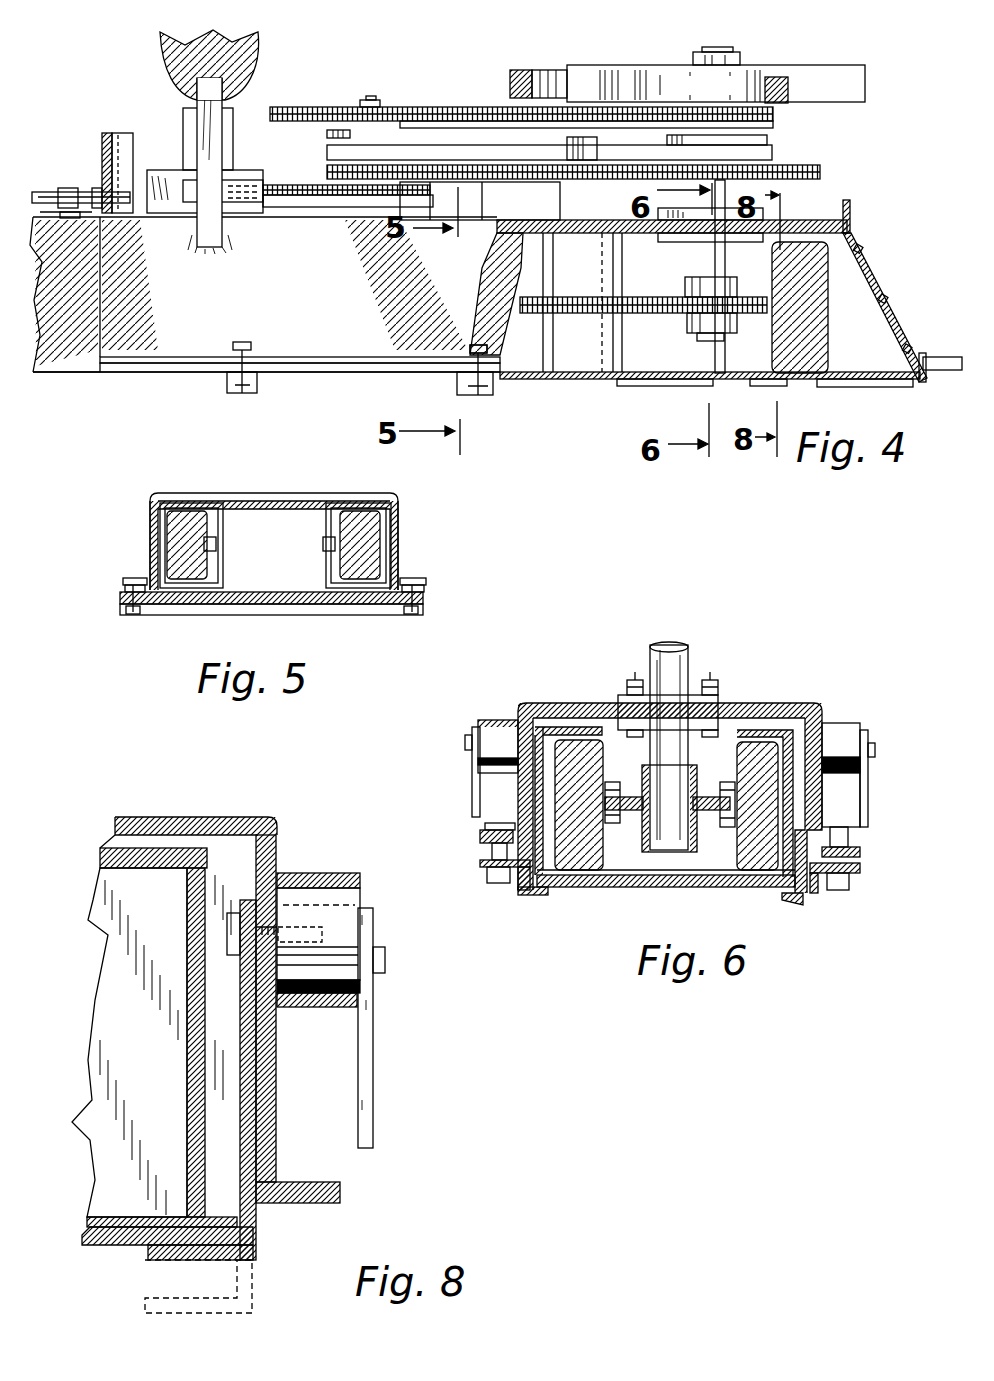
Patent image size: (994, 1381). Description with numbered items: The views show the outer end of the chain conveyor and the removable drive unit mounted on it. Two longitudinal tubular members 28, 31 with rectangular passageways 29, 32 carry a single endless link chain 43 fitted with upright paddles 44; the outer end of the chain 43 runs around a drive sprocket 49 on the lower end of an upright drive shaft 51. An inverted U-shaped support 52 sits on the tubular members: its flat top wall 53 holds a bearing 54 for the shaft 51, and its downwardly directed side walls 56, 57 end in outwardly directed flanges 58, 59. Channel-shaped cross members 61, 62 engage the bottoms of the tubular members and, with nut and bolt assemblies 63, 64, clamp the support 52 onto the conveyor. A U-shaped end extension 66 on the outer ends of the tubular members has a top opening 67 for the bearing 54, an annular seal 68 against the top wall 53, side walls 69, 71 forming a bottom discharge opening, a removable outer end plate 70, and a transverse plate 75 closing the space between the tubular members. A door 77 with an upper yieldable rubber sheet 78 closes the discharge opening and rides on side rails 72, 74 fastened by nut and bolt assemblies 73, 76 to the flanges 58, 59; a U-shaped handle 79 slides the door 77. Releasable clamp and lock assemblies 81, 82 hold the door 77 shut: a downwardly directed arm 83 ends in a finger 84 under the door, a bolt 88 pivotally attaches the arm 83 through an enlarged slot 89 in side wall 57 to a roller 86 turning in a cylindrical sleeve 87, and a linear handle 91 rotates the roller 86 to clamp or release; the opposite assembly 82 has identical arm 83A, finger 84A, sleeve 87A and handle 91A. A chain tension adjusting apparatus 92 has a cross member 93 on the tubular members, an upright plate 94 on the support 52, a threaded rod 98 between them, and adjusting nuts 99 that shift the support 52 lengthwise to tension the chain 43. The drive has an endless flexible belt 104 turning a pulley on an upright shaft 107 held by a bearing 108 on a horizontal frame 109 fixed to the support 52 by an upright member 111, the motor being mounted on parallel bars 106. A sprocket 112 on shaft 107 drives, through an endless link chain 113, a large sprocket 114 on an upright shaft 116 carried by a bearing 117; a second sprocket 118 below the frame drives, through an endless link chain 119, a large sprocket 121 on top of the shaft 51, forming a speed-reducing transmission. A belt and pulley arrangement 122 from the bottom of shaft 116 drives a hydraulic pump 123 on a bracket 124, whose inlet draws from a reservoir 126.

In FIG. 5, the tubular member 28 is at (230, 535).
In FIG. 5, the longitudinal passageway 29 is at (338, 520).
In FIG. 4, the tubular member 31 is at (90, 362).
In FIG. 5, the tubular member 31 is at (323, 507).
In FIG. 5, the longitudinal passageway 32 is at (207, 577).
In FIG. 4, the endless link chain 43 is at (563, 320).
In FIG. 5, the endless link chain 43 is at (207, 557).
In FIG. 6, the endless link chain 43 is at (722, 827).
In FIG. 4, the upright paddles 44 is at (543, 353).
In FIG. 5, the upright paddles 44 is at (173, 520).
In FIG. 6, the upright paddles 44 is at (753, 860).
In FIG. 4, the drive sprocket 49 is at (690, 317).
In FIG. 6, the drive sprocket 49 is at (640, 840).
In FIG. 4, the drive shaft 51 is at (700, 325).
In FIG. 6, the drive shaft 51 is at (667, 840).
In FIG. 4, the U-shaped support 52 is at (180, 305).
In FIG. 5, the U-shaped support 52 is at (399, 491).
In FIG. 6, the U-shaped support 52 is at (812, 698).
In FIG. 8, the U-shaped support 52 is at (128, 805).
In FIG. 4, the top wall 53 is at (672, 226).
In FIG. 5, the top wall 53 is at (282, 493).
In FIG. 6, the top wall 53 is at (748, 707).
In FIG. 4, the bearing 54 is at (693, 242).
In FIG. 6, the bearing 54 is at (627, 722).
In FIG. 5, the side wall 56 is at (147, 522).
In FIG. 6, the side wall 56 is at (518, 703).
In FIG. 5, the side wall 57 is at (400, 540).
In FIG. 6, the side wall 57 is at (822, 720).
In FIG. 8, the side wall 57 is at (247, 817).
In FIG. 5, the flange 58 is at (123, 576).
In FIG. 6, the flange 58 is at (487, 843).
In FIG. 5, the flange 59 is at (420, 580).
In FIG. 6, the flange 59 is at (848, 840).
In FIG. 8, the flange 59 is at (340, 1192).
In FIG. 4, the channel-shaped cross member 61 is at (250, 396).
In FIG. 4, the channel-shaped cross member 62 is at (462, 396).
In FIG. 5, the channel-shaped cross member 62 is at (183, 607).
In FIG. 4, the nut and bolt assembly 63 is at (240, 342).
In FIG. 4, the nut and bolt assembly 64 is at (477, 342).
In FIG. 5, the nut and bolt assembly 64 is at (125, 616).
In FIG. 6, the U-shaped end extension 66 is at (540, 725).
In FIG. 4, the top opening 67 is at (636, 235).
In FIG. 6, the top opening 67 is at (730, 703).
In FIG. 6, the annular seal 68 is at (557, 703).
In FIG. 6, the side wall 69 is at (547, 790).
In FIG. 4, the removable outer end plate 70 is at (867, 262).
In FIG. 6, the side wall 71 is at (797, 793).
In FIG. 8, the side wall 71 is at (197, 1032).
In FIG. 4, the side rail 72 is at (627, 386).
In FIG. 6, the side rail 72 is at (537, 893).
In FIG. 6, the nut and bolt assembly 73 is at (492, 883).
In FIG. 6, the side rail 74 is at (812, 900).
In FIG. 4, the transverse plate 75 is at (622, 362).
In FIG. 6, the nut and bolt assembly 76 is at (848, 888).
In FIG. 4, the door 77 is at (925, 387).
In FIG. 8, the door 77 is at (100, 1245).
In FIG. 6, the yieldable rubber sheet 78 is at (707, 872).
In FIG. 8, the yieldable rubber sheet 78 is at (87, 1215).
In FIG. 4, the U-shaped handle 79 is at (957, 357).
In FIG. 6, the releasable clamp and lock assembly 81 is at (882, 768).
In FIG. 8, the releasable clamp and lock assembly 81 is at (343, 862).
In FIG. 6, the releasable clamp and lock assembly 82 is at (455, 718).
In FIG. 6, the arm 83 is at (783, 760).
In FIG. 8, the arm 83 is at (250, 1217).
In FIG. 6, the arm 83A is at (487, 827).
In FIG. 4, the finger 84 is at (773, 387).
In FIG. 6, the finger 84 is at (790, 900).
In FIG. 8, the finger 84 is at (168, 1260).
In FIG. 6, the finger 84A is at (550, 890).
In FIG. 8, the roller 86 is at (337, 917).
In FIG. 6, the cylindrical sleeve 87 is at (843, 737).
In FIG. 8, the cylindrical sleeve 87 is at (305, 873).
In FIG. 6, the cylindrical sleeve 87A is at (495, 730).
In FIG. 8, the bolt 88 is at (233, 915).
In FIG. 8, the enlarged hole or slot 89 is at (290, 1008).
In FIG. 6, the linear handle 91 is at (865, 805).
In FIG. 8, the linear handle 91 is at (363, 1017).
In FIG. 6, the linear handle 91A is at (475, 792).
In FIG. 4, the chain tension adjusting apparatus 92 is at (75, 128).
In FIG. 4, the cross member 93 is at (68, 217).
In FIG. 4, the upright plate 94 is at (103, 132).
In FIG. 4, the threaded rod 98 is at (37, 192).
In FIG. 4, the adjusting nuts 99 is at (80, 188).
In FIG. 4, the endless flexible belt 104 is at (520, 70).
In FIG. 4, the parallel bars 106 is at (807, 72).
In FIG. 4, the upright shaft 107 is at (713, 52).
In FIG. 4, the bearing 108 is at (767, 143).
In FIG. 4, the horizontal frame 109 is at (772, 157).
In FIG. 4, the upright member 111 is at (543, 195).
In FIG. 4, the sprocket 112 is at (772, 120).
In FIG. 4, the endless link chain 113 is at (468, 80).
In FIG. 4, the large sprocket 114 is at (330, 106).
In FIG. 4, the upright shaft 116 is at (368, 96).
In FIG. 4, the bearing 117 is at (327, 133).
In FIG. 4, the second sprocket 118 is at (327, 170).
In FIG. 4, the endless link chain 119 is at (428, 196).
In FIG. 4, the large sprocket 121 is at (820, 172).
In FIG. 4, the power transmitting belt and pulley arrangement 122 is at (307, 200).
In FIG. 4, the hydraulic pump 123 is at (227, 105).
In FIG. 4, the bracket 124 is at (173, 173).
In FIG. 4, the reservoir 126 is at (250, 38).